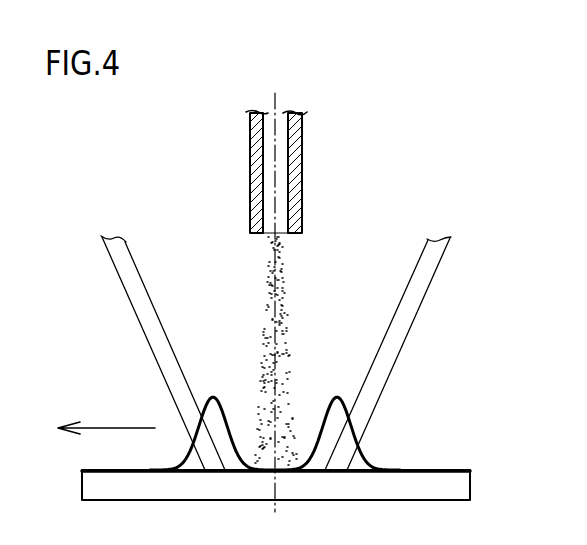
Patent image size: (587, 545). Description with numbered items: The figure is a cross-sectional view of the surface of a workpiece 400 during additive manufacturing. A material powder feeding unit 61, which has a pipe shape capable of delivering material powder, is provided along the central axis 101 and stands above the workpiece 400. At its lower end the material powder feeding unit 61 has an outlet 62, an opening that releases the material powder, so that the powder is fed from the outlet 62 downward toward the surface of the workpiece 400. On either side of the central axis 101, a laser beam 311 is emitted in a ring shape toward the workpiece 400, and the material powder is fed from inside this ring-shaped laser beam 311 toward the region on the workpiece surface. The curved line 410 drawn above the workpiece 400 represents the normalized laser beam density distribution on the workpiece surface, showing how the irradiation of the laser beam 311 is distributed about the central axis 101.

The material powder feeding unit 61 is at (302, 128).
The outlet 62 is at (278, 233).
The central axis 101 is at (284, 287).
The laser beam 311 is at (126, 290).
The curved line 410 is at (365, 460).
The workpiece 400 is at (470, 486).